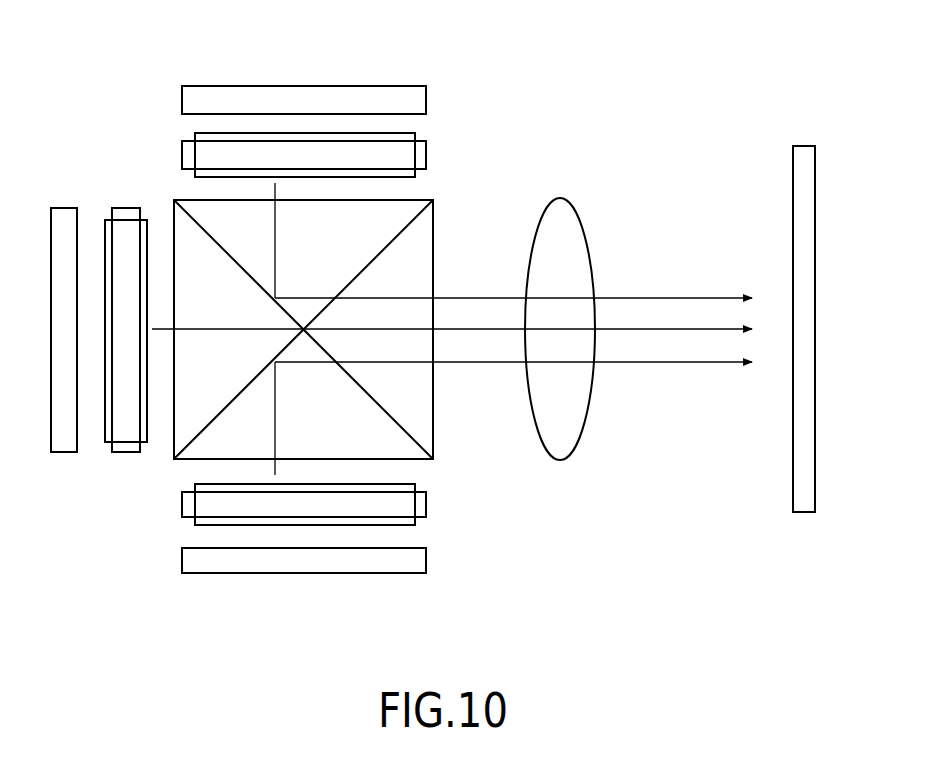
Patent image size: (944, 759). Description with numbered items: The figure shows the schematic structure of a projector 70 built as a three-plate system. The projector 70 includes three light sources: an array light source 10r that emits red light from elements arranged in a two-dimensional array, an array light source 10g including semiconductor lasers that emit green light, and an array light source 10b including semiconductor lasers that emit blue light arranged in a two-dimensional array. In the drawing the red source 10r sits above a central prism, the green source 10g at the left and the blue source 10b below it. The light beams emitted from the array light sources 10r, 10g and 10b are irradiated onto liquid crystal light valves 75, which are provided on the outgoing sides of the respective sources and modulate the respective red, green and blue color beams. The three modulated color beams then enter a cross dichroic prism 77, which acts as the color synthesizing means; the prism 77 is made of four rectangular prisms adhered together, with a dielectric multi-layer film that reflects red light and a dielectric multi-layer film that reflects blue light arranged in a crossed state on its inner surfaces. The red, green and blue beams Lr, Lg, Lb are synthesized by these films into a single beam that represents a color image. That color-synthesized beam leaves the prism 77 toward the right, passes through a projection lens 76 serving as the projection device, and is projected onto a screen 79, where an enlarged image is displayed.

The projector 70 is at (578, 80).
The array light source 10r is at (426, 97).
The array light source 10g is at (63, 207).
The array light source 10b is at (426, 558).
The liquid crystal light valve 75 is at (426, 152).
The projection lens 76 is at (589, 240).
The cross dichroic prism 77 is at (433, 418).
The screen 79 is at (815, 250).
The red light beam Lr is at (275, 230).
The green light beam Lg is at (217, 327).
The blue light beam Lb is at (275, 421).